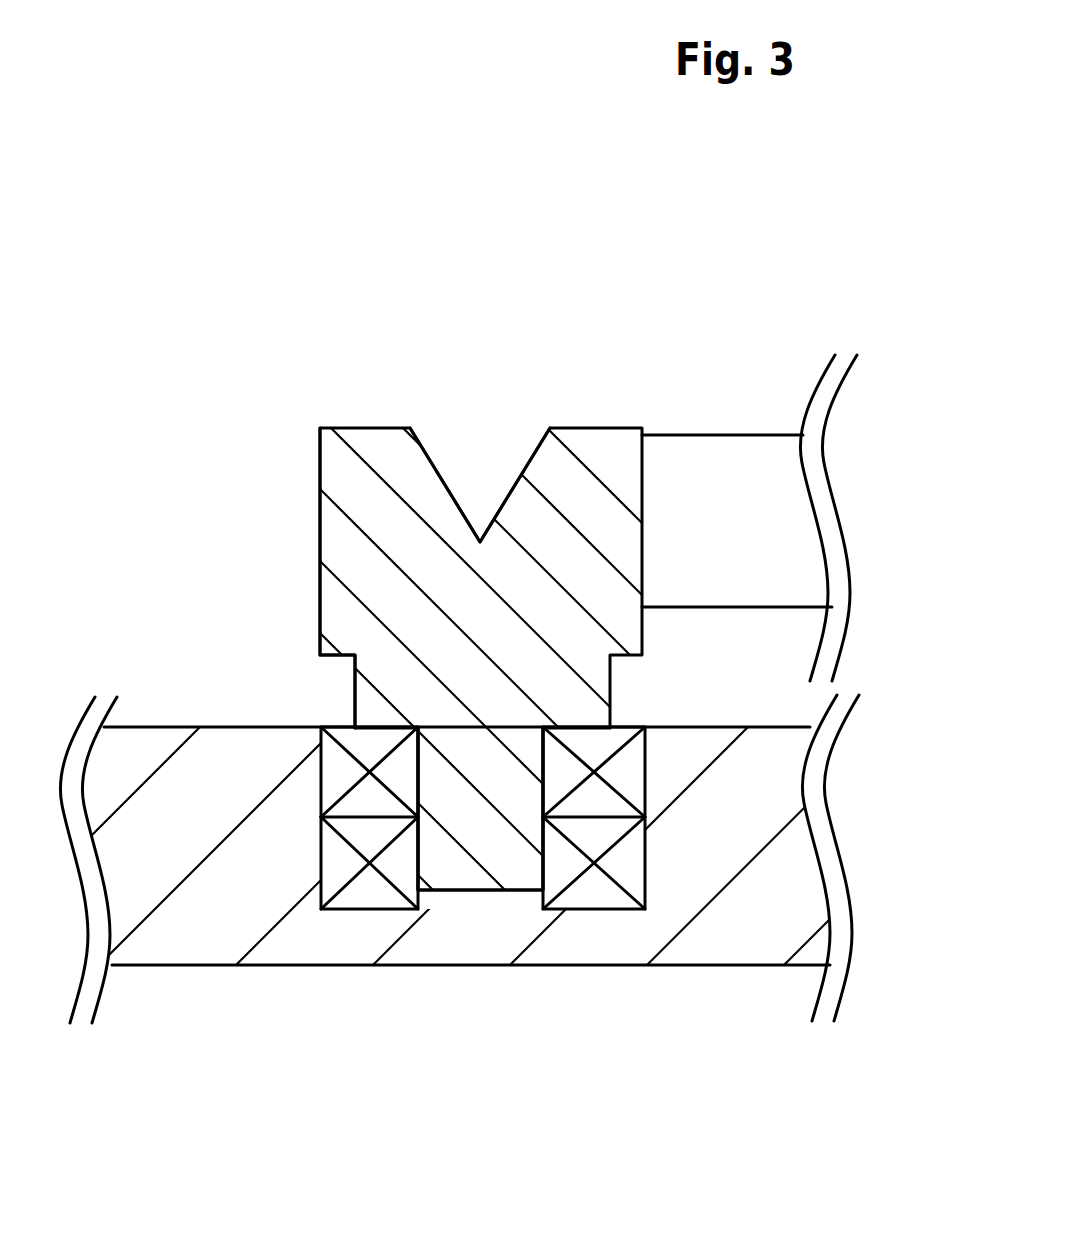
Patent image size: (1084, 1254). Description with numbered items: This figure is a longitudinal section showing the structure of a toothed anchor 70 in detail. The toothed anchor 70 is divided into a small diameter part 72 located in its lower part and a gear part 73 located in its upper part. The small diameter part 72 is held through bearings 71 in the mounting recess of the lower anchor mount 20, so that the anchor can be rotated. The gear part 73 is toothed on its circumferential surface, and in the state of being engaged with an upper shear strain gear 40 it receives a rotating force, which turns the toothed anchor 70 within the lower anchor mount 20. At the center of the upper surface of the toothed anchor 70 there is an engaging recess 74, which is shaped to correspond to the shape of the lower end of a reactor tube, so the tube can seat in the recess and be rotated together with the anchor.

The lower anchor mount 20 is at (186, 954).
The upper shear strain gear 40 is at (717, 478).
The toothed anchor 70 is at (320, 470).
The bearings 71 is at (627, 770).
The small diameter part 72 is at (482, 848).
The gear part 73 is at (320, 590).
The engaging recess 74 is at (528, 470).